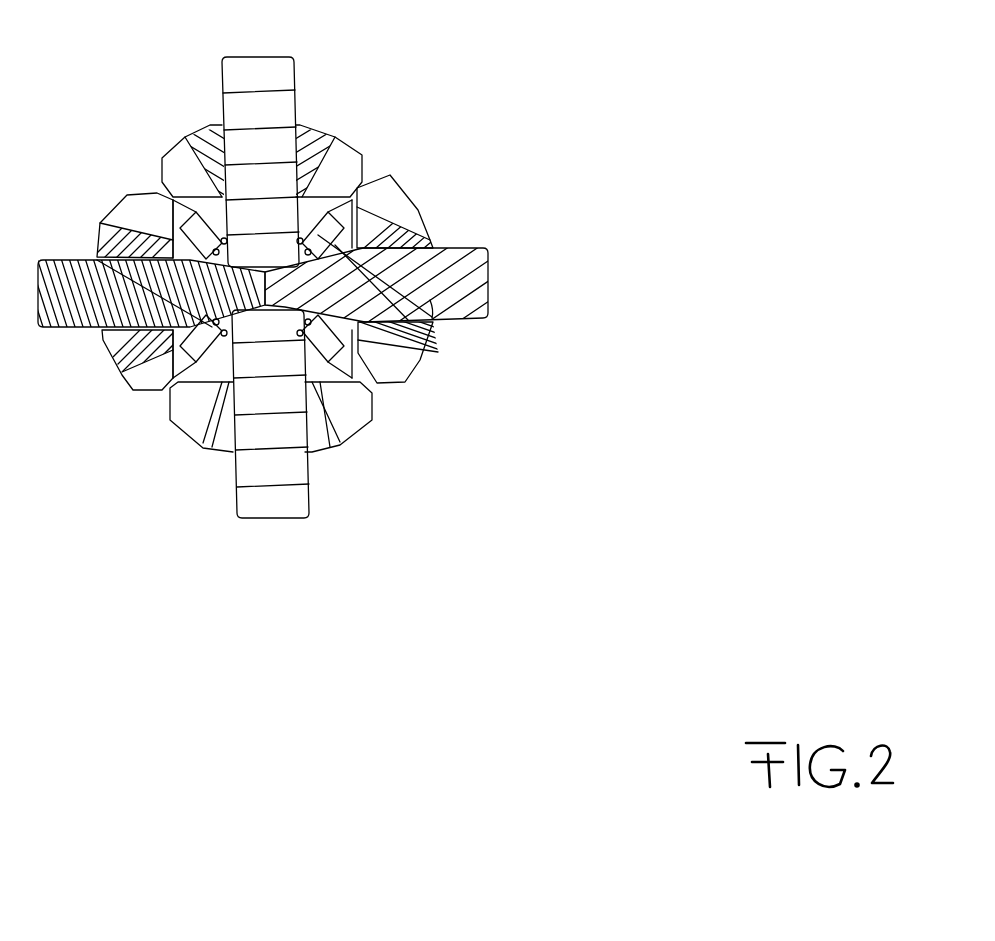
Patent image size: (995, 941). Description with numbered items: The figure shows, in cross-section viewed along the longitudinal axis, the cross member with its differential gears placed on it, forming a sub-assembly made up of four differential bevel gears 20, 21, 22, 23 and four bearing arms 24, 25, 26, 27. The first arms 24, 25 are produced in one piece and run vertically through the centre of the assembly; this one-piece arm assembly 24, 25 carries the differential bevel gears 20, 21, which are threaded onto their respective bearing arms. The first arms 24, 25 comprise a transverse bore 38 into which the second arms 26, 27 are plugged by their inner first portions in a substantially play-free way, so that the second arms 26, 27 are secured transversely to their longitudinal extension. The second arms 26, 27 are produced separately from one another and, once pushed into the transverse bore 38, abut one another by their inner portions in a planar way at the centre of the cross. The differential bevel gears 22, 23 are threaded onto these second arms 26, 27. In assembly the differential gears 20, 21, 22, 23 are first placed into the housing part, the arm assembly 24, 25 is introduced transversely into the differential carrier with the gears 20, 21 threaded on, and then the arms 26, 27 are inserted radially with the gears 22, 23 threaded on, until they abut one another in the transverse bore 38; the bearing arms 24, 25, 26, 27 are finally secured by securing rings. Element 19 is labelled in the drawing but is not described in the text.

The bearing housing lobe 19 is at (385, 175).
The differential bevel gear 20 is at (315, 140).
The differential bevel gear 21 is at (323, 437).
The differential bevel gear 22 is at (125, 360).
The differential bevel gear 23 is at (420, 357).
The first arm 24 is at (273, 78).
The first arm 25 is at (292, 500).
The second arm 26 is at (60, 318).
The second arm 27 is at (488, 318).
The transverse bore 38 is at (430, 238).